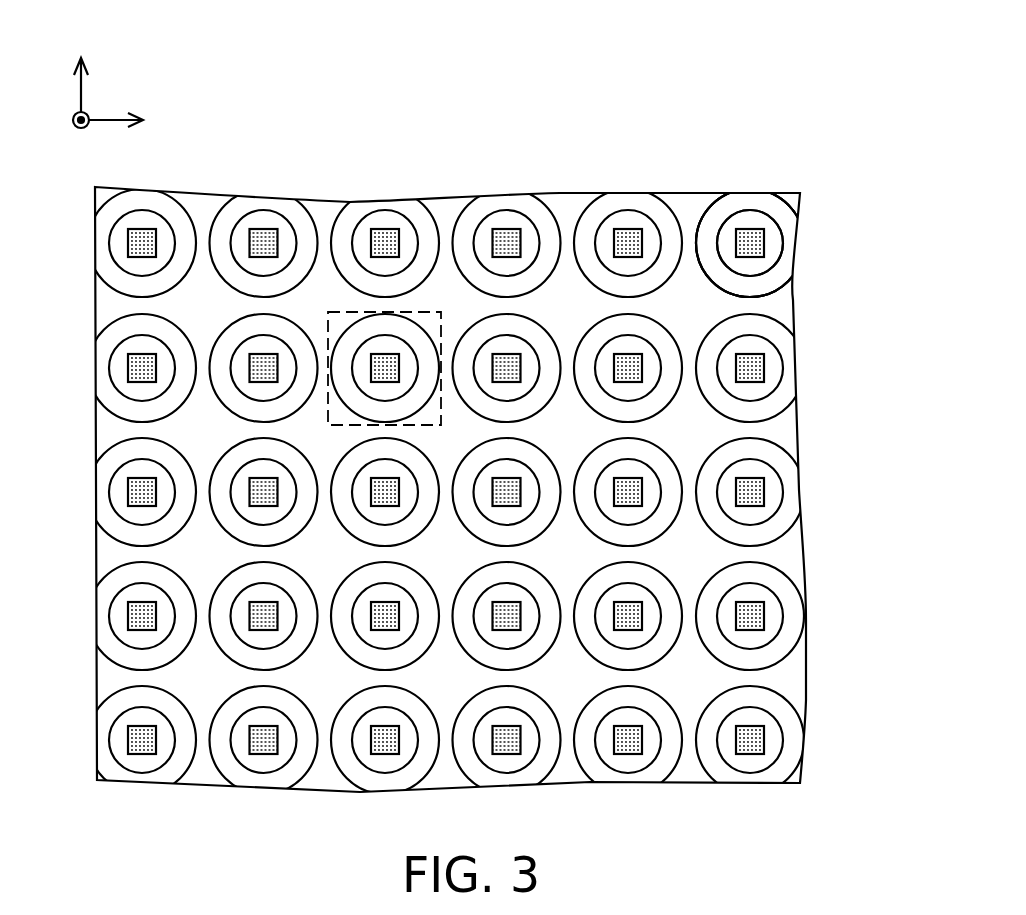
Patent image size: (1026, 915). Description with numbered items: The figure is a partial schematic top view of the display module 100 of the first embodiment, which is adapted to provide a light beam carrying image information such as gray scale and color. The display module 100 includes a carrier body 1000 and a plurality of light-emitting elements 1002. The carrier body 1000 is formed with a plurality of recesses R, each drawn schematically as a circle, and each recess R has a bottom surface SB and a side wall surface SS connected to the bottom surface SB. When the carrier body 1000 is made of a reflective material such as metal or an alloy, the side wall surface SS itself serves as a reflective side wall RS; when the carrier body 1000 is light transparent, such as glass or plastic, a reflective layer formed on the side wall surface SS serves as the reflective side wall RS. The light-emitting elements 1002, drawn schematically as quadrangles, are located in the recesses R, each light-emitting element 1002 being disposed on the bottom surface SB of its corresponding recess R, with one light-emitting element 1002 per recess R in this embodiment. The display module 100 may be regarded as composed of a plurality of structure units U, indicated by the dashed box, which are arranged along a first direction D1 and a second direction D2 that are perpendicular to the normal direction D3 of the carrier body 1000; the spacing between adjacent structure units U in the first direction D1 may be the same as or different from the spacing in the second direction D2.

The display module 100 is at (804, 823).
The carrier body 1000 is at (683, 203).
The light-emitting element 1002 is at (620, 242).
The recess R is at (848, 100).
The reflective side wall RS is at (762, 192).
The side wall surface SS is at (750, 243).
The bottom surface SB is at (785, 250).
The structure unit U is at (329, 312).
The first direction D1 is at (132, 121).
The second direction D2 is at (82, 68).
The normal direction D3 is at (81, 142).